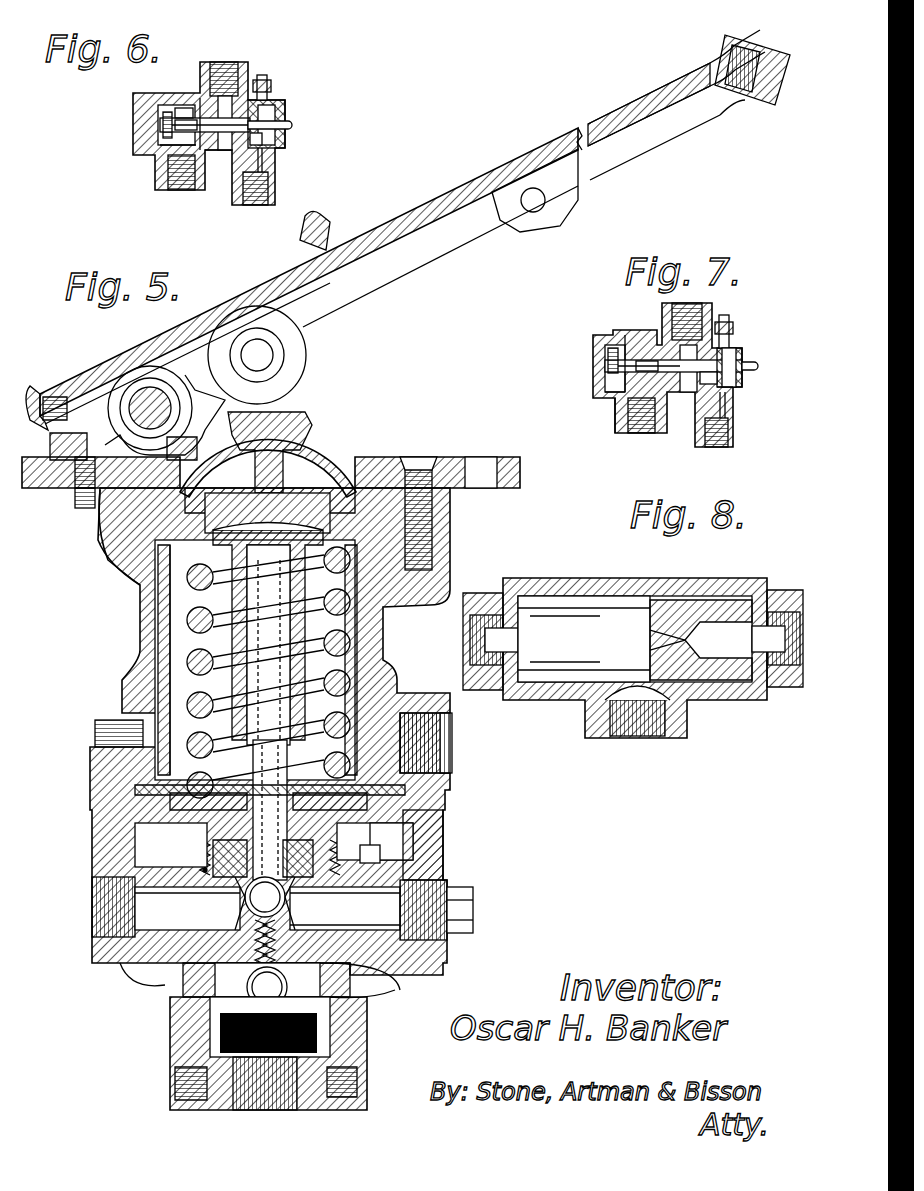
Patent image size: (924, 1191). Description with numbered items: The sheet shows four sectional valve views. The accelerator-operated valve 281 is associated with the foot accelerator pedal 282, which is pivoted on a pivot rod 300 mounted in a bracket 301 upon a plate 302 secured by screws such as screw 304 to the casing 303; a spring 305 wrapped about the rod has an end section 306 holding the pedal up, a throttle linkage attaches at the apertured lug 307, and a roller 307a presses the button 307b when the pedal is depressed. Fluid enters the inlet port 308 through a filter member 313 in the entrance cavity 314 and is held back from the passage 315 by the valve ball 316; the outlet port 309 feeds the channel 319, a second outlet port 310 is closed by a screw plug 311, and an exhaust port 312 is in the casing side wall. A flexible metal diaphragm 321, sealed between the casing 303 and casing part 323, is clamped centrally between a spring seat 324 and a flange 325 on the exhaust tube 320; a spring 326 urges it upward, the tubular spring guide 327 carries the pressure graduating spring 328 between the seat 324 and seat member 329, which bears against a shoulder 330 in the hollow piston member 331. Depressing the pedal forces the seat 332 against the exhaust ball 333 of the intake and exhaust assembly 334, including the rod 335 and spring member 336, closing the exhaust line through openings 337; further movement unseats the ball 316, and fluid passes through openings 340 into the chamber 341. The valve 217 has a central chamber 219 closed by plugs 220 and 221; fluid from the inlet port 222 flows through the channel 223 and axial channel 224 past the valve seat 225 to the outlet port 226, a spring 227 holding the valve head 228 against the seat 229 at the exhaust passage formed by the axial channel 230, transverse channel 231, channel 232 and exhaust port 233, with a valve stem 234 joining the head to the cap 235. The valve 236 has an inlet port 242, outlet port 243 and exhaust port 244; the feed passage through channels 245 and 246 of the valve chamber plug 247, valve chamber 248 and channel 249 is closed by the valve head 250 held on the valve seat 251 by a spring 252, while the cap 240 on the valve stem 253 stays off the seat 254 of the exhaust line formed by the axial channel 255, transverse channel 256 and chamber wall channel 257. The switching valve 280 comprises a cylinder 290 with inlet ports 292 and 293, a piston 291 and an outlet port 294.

In FIG. 6, the valve 236 is at (140, 92).
In FIG. 6, the outlet port 243 is at (225, 70).
In FIG. 6, the inlet port 242 is at (172, 188).
In FIG. 6, the exhaust port 244 is at (270, 193).
In FIG. 6, the seat 254 is at (228, 175).
In FIG. 6, the channel 245 is at (180, 112).
In FIG. 6, the valve head 250 is at (160, 120).
In FIG. 6, the valve chamber plug 247 is at (145, 137).
In FIG. 6, the spring 252 is at (138, 146).
In FIG. 6, the channel 246 is at (178, 160).
In FIG. 6, the valve seat 251 is at (198, 95).
In FIG. 6, the channel 249 is at (260, 98).
In FIG. 6, the valve chamber 248 is at (268, 84).
In FIG. 6, the axial channel 255 is at (272, 110).
In FIG. 6, the cap 240 is at (293, 125).
In FIG. 6, the transverse channel 256 is at (262, 140).
In FIG. 6, the chamber wall channel 257 is at (262, 160).
In FIG. 6, the valve stem 253 is at (202, 188).
In FIG. 7, the valve 217 is at (620, 332).
In FIG. 7, the outlet port 226 is at (690, 306).
In FIG. 7, the inlet port 222 is at (632, 430).
In FIG. 7, the exhaust port 233 is at (712, 438).
In FIG. 7, the central chamber 219 is at (675, 398).
In FIG. 7, the axial channel 224 is at (626, 365).
In FIG. 7, the valve head 228 is at (614, 350).
In FIG. 7, the plug 220 is at (625, 340).
In FIG. 7, the valve seat 225 is at (656, 340).
In FIG. 7, the channel 223 is at (622, 378).
In FIG. 7, the spring 227 is at (630, 406).
In FIG. 7, the axial channel 230 is at (708, 345).
In FIG. 7, the valve stem 234 is at (728, 320).
In FIG. 7, the plug 221 is at (740, 356).
In FIG. 7, the cap 235 is at (758, 366).
In FIG. 7, the transverse channel 231 is at (718, 378).
In FIG. 7, the seat 229 is at (735, 395).
In FIG. 7, the channel 232 is at (722, 412).
In FIG. 8, the switching valve 280 is at (619, 572).
In FIG. 8, the inlet port 292 is at (482, 612).
In FIG. 8, the inlet port 293 is at (782, 608).
In FIG. 8, the cylinder 290 is at (558, 582).
In FIG. 8, the piston 291 is at (695, 600).
In FIG. 8, the outlet port 294 is at (655, 735).
In FIG. 5, the foot accelerator pedal 282 is at (433, 182).
In FIG. 5, the apertured lug 307 is at (522, 215).
In FIG. 5, the end section 306 is at (262, 300).
In FIG. 5, the roller 307a is at (300, 357).
In FIG. 5, the spring 305 is at (118, 385).
In FIG. 5, the pivot rod 300 is at (148, 395).
In FIG. 5, the bracket 301 is at (190, 442).
In FIG. 5, the button 307b is at (296, 422).
In FIG. 5, the plate 302 is at (478, 457).
In FIG. 5, the accelerator-operated valve 281 is at (366, 448).
In FIG. 5, the screw 304 is at (430, 460).
In FIG. 5, the casing 303 is at (450, 548).
In FIG. 5, the exhaust port 312 is at (452, 771).
In FIG. 5, the seat member 329 is at (152, 562).
In FIG. 5, the pressure graduating spring 328 is at (187, 622).
In FIG. 5, the hollow piston member 331 is at (166, 606).
In FIG. 5, the shoulder 330 is at (215, 532).
In FIG. 5, the tubular spring guide 327 is at (268, 645).
In FIG. 5, the openings 337 is at (250, 725).
In FIG. 5, the flange 325 is at (200, 850).
In FIG. 5, the spring 326 is at (200, 862).
In FIG. 5, the spring seat 324 is at (140, 793).
In FIG. 5, the casing part 323 is at (95, 837).
In FIG. 5, the chamber 341 is at (210, 850).
In FIG. 5, the flexible metal diaphragm 321 is at (382, 818).
In FIG. 5, the openings 340 is at (420, 855).
In FIG. 5, the second outlet port 310 is at (440, 870).
In FIG. 5, the outlet port 309 is at (100, 912).
In FIG. 5, the channel 319 is at (187, 908).
In FIG. 5, the exhaust tube 320 is at (345, 908).
In FIG. 5, the exhaust ball 333 is at (345, 914).
In FIG. 5, the seat 332 is at (243, 902).
In FIG. 5, the screw plug 311 is at (465, 902).
In FIG. 5, the rod 335 is at (240, 930).
In FIG. 5, the passage 315 is at (200, 975).
In FIG. 5, the valve ball 316 is at (287, 993).
In FIG. 5, the intake and exhaust assembly 334 is at (355, 972).
In FIG. 5, the spring member 336 is at (300, 997).
In FIG. 5, the entrance cavity 314 is at (230, 1000).
In FIG. 5, the filter member 313 is at (195, 1040).
In FIG. 5, the inlet port 308 is at (245, 1108).